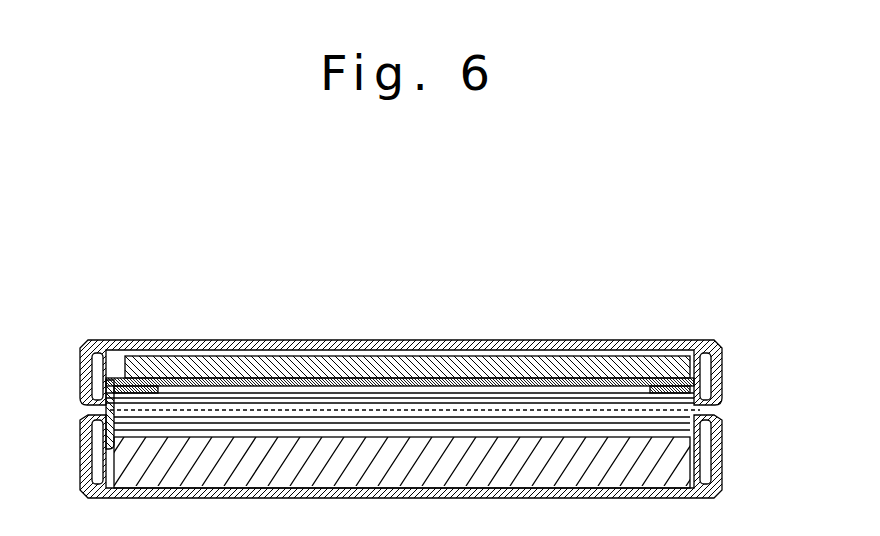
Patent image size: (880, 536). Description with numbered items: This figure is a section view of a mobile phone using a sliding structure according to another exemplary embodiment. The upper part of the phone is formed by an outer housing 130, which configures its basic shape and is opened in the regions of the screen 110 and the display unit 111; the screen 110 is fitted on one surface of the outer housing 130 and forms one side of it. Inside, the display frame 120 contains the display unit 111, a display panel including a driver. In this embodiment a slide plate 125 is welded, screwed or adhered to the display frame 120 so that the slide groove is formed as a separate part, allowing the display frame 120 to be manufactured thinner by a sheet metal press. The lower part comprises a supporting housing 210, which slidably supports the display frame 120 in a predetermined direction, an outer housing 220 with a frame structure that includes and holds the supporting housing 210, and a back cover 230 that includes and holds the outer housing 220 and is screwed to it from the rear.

The screen 110 is at (630, 340).
The display unit 111 is at (192, 347).
The display frame 120 is at (124, 344).
The slide plate 125 is at (533, 338).
The outer housing 130 is at (720, 372).
The supporting housing 210 is at (104, 409).
The outer housing 220 is at (722, 424).
The back cover 230 is at (720, 462).